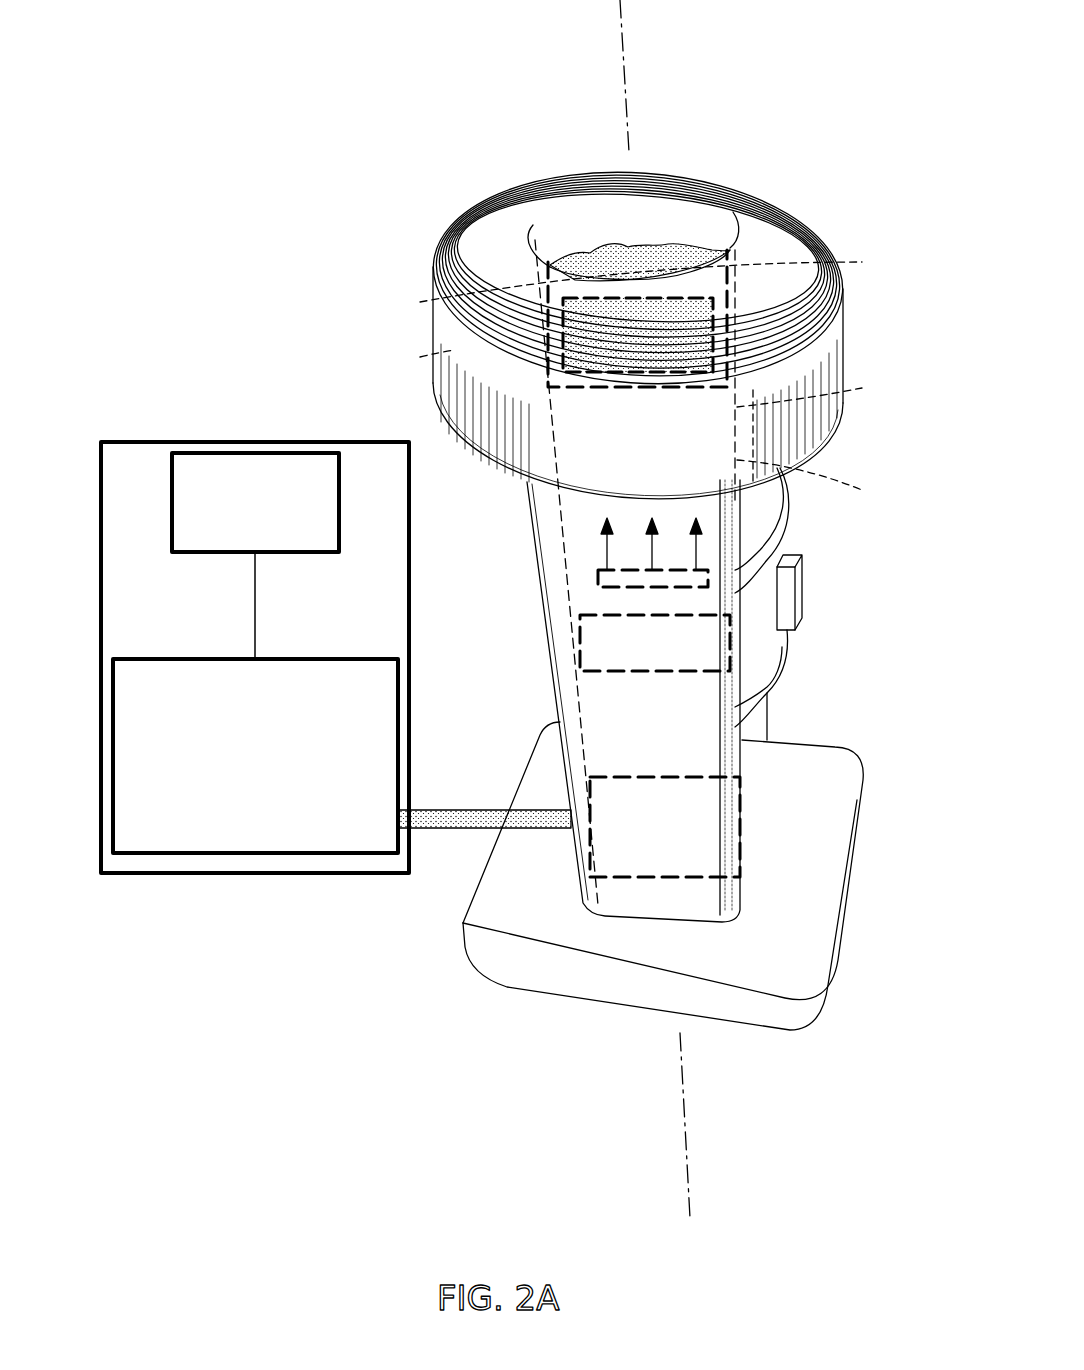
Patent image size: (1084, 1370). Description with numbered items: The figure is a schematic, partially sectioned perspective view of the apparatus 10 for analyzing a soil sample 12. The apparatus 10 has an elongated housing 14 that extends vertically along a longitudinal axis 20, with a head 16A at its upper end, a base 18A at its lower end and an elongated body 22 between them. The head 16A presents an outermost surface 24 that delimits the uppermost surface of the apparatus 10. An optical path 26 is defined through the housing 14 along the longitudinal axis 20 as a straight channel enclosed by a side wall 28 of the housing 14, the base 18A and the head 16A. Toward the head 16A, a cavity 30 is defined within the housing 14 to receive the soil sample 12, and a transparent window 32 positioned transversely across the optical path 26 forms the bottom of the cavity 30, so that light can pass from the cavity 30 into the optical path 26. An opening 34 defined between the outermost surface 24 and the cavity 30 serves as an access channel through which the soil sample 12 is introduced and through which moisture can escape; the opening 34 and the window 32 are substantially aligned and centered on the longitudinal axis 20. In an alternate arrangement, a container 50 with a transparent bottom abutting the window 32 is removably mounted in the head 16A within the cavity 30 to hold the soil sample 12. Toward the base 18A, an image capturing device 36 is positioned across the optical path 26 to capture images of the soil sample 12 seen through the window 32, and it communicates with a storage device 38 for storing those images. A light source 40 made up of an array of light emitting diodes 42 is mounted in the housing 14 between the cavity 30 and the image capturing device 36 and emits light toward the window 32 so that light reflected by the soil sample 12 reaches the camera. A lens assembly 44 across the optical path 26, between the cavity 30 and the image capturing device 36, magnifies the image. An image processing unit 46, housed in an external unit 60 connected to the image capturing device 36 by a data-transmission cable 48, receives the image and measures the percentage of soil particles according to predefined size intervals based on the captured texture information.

The apparatus 10 is at (312, 160).
The soil sample 12 is at (597, 255).
The elongated housing 14 is at (472, 468).
The head 16A is at (846, 335).
The base 18A is at (465, 943).
The longitudinal axis 20 is at (628, 72).
The elongated body 22 is at (533, 576).
The outermost surface 24 is at (510, 263).
The optical path 26 is at (787, 473).
The side wall 28 is at (543, 633).
The cavity 30 is at (735, 280).
The transparent window 32 is at (737, 388).
The opening 34 is at (710, 228).
The image capturing device 36 is at (713, 857).
The storage device 38 is at (172, 500).
The light source 40 is at (713, 578).
The light emitting diodes 42 is at (712, 549).
The lens assembly 44 is at (735, 643).
The image processing unit 46 is at (140, 855).
The data-transmission cable 48 is at (432, 830).
The container 50 is at (530, 287).
The external unit 60 is at (210, 875).